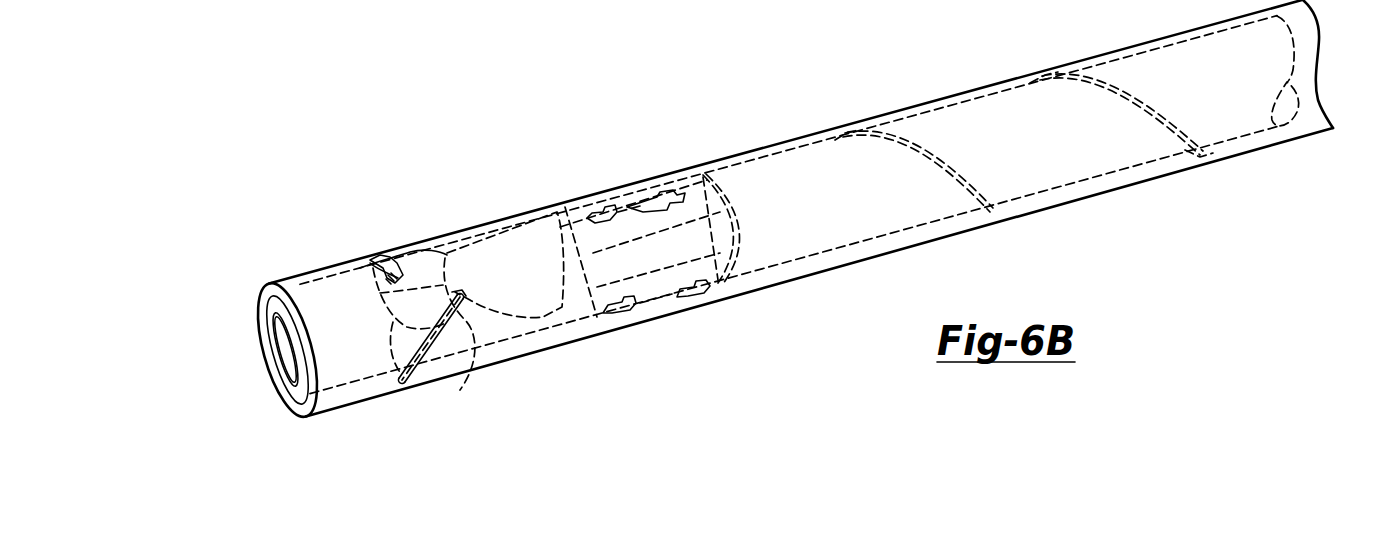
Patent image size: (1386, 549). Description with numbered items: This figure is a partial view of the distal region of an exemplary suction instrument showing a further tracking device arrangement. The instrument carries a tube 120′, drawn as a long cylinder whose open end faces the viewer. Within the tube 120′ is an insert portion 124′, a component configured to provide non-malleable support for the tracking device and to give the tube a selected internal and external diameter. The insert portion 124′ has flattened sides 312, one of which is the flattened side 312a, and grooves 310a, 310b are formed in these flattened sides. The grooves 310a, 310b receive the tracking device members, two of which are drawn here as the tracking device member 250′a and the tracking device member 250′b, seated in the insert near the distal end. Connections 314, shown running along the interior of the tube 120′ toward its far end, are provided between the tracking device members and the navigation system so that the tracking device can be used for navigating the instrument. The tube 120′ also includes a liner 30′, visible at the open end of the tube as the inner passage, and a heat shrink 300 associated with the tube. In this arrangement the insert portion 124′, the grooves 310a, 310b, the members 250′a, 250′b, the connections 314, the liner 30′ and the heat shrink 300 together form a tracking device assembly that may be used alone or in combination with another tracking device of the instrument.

The liner 30′ is at (280, 330).
The insert portion 124′ is at (300, 286).
The tube 120′ is at (930, 248).
The heat shrink 300 is at (1232, 158).
The connections 314 is at (513, 240).
The flattened side 312 is at (460, 337).
The flattened side 312a is at (440, 250).
The groove 310a is at (373, 268).
The groove 310b is at (450, 260).
The tracking device member 250′a is at (400, 250).
The tracking device member 250′b is at (420, 362).